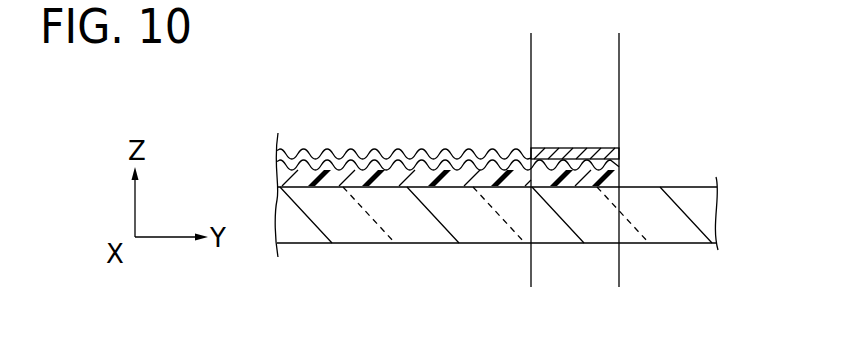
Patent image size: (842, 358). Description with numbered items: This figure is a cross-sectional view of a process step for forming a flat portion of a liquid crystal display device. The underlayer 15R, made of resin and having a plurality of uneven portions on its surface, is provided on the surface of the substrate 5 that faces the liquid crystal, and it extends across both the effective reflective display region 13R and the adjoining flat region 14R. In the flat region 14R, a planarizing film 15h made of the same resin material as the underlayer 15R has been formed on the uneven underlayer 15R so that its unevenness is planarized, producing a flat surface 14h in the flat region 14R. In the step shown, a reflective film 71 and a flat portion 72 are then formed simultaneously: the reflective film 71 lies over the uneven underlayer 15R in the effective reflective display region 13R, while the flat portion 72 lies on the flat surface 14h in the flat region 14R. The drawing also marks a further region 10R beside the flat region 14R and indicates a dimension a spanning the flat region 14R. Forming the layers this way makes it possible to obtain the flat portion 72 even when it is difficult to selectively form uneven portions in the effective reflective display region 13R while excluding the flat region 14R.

The substrate 5 is at (297, 233).
The reflective film 71 is at (403, 135).
The flat portion 72 is at (540, 139).
The effective reflective display region 13R is at (531, 46).
The flat region 14R is at (619, 46).
The third region 10R is at (727, 46).
The flat surface 14h is at (585, 147).
The planarizing film 15h is at (568, 159).
The underlayer 15R is at (423, 180).
The width a is at (619, 276).